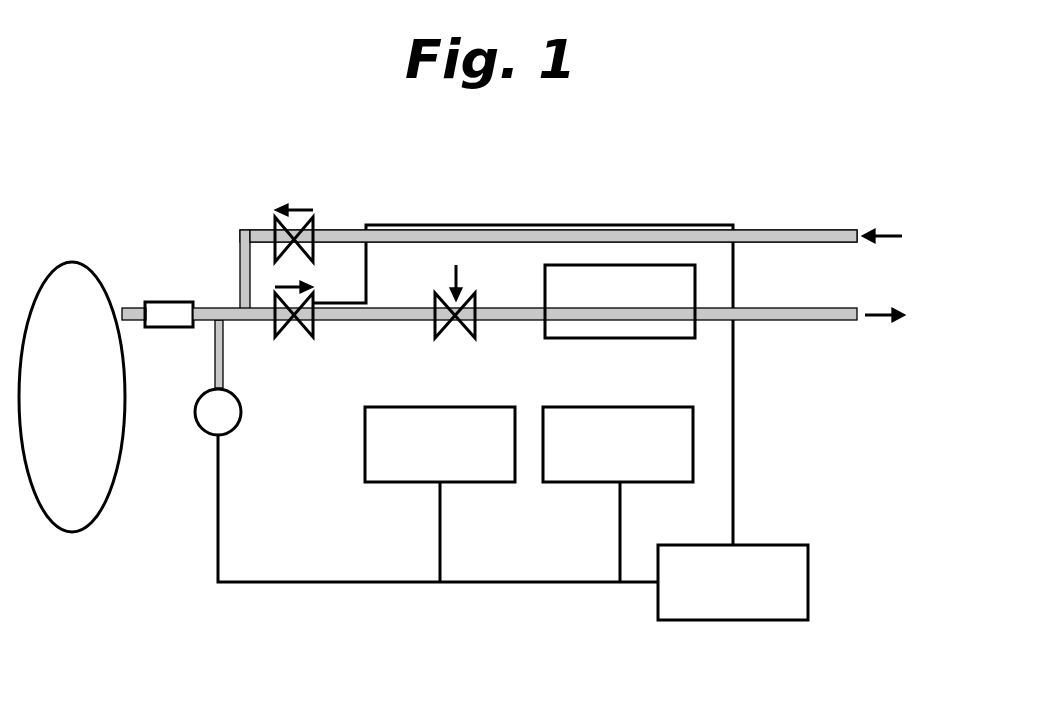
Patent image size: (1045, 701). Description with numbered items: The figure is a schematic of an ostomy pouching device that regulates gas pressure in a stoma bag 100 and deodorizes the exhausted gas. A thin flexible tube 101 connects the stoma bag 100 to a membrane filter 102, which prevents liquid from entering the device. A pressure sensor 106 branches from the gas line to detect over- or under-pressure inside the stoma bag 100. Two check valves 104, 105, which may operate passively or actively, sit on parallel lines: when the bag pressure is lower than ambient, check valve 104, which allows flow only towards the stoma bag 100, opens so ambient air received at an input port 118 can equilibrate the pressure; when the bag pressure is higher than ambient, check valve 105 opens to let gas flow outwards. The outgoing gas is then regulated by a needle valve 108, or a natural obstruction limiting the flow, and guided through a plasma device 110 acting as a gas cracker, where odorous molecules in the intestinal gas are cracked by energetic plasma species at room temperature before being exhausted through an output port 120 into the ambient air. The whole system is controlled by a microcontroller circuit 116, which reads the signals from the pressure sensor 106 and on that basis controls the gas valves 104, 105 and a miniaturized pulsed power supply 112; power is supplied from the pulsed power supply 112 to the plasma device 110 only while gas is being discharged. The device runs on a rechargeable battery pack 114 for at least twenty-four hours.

The stoma bag 100 is at (50, 407).
The thin flexible tube 101 is at (136, 306).
The membrane filter 102 is at (183, 302).
The check valve 104 is at (273, 223).
The check valve 105 is at (313, 328).
The pressure sensor 106 is at (240, 416).
The needle valve 108 is at (475, 330).
The plasma device 110 is at (598, 309).
The pulsed power supply 112 is at (596, 458).
The battery pack 114 is at (418, 458).
The microcontroller circuit 116 is at (711, 595).
The input port 118 is at (840, 238).
The output port 120 is at (845, 316).